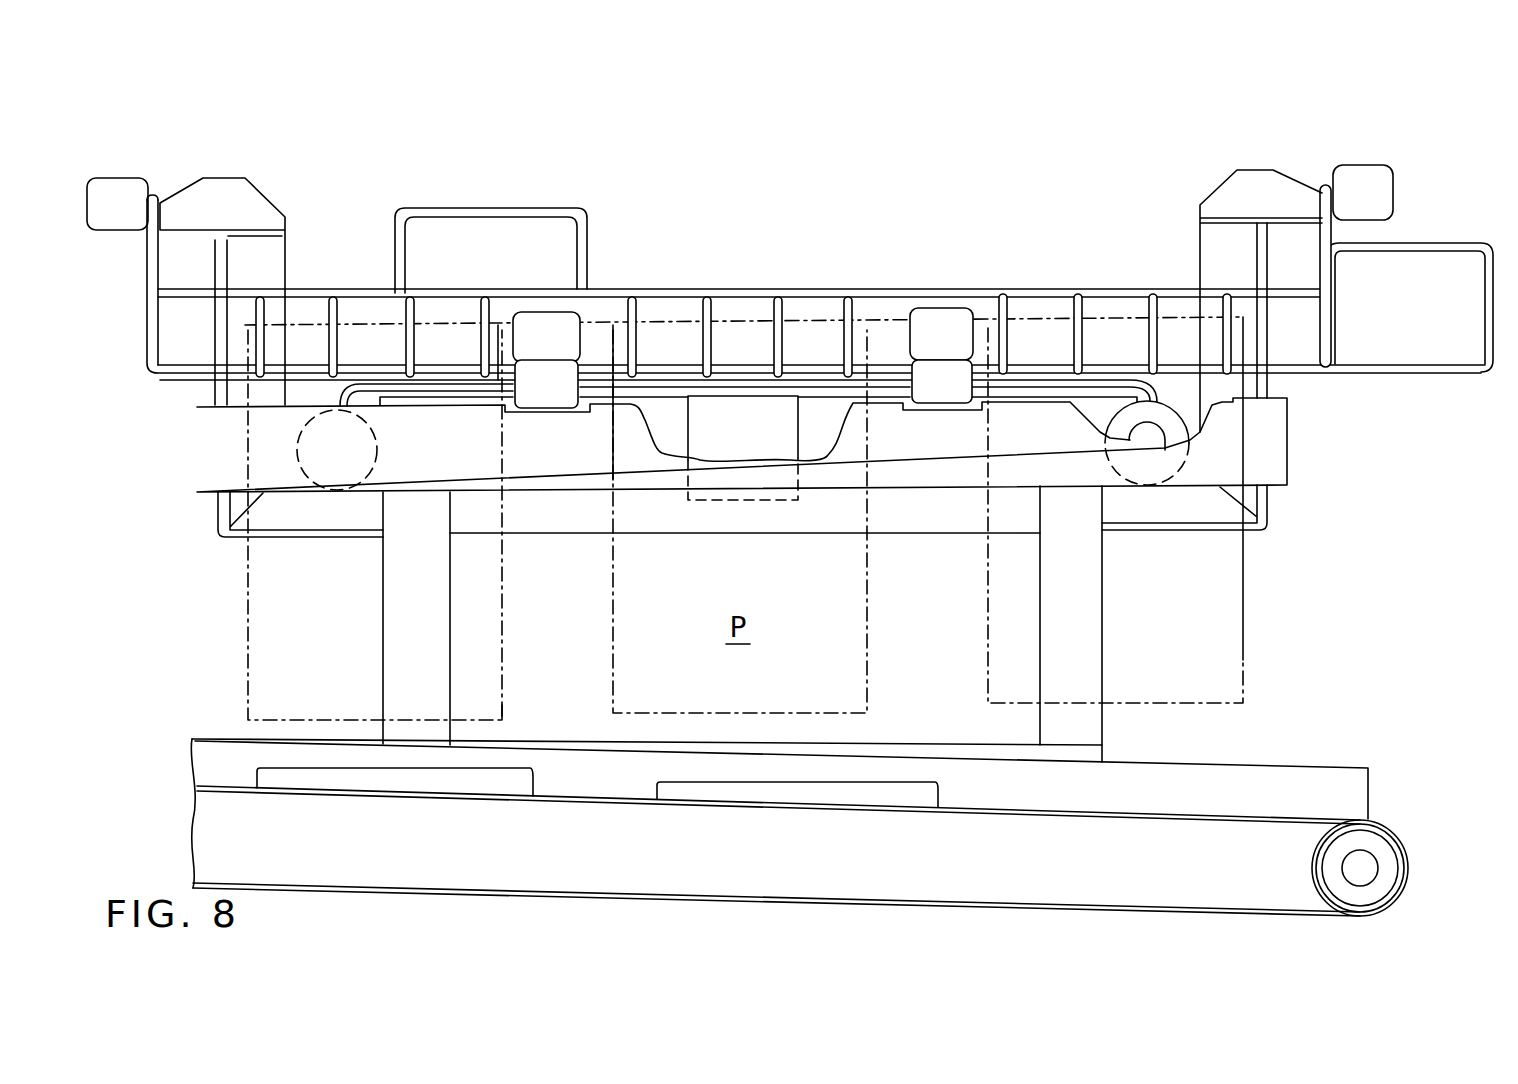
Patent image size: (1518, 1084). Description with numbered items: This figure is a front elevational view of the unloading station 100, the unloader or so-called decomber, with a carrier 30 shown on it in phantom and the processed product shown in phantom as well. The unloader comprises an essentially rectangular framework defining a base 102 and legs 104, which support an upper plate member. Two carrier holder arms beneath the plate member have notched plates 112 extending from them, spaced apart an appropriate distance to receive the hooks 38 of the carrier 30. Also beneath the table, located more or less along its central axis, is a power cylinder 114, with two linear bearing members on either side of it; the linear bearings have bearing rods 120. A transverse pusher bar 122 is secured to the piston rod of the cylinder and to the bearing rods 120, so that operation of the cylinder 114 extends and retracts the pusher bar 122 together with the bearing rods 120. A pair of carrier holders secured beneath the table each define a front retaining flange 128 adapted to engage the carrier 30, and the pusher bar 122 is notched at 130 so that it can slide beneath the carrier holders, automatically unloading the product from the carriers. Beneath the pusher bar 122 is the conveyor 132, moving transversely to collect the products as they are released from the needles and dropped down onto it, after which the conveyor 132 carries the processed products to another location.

The carrier 30 is at (880, 262).
The hooks 38 is at (150, 190).
The unloading station 100 is at (610, 180).
The base 102 is at (1100, 757).
The legs 104 is at (1090, 613).
The notched plates 112 is at (231, 187).
The power cylinder 114 is at (737, 418).
The bearing rods 120 is at (1167, 428).
The pusher bar 122 is at (575, 484).
The front retaining flange 128 is at (557, 330).
The notch 130 is at (527, 415).
The conveyor 132 is at (1260, 817).